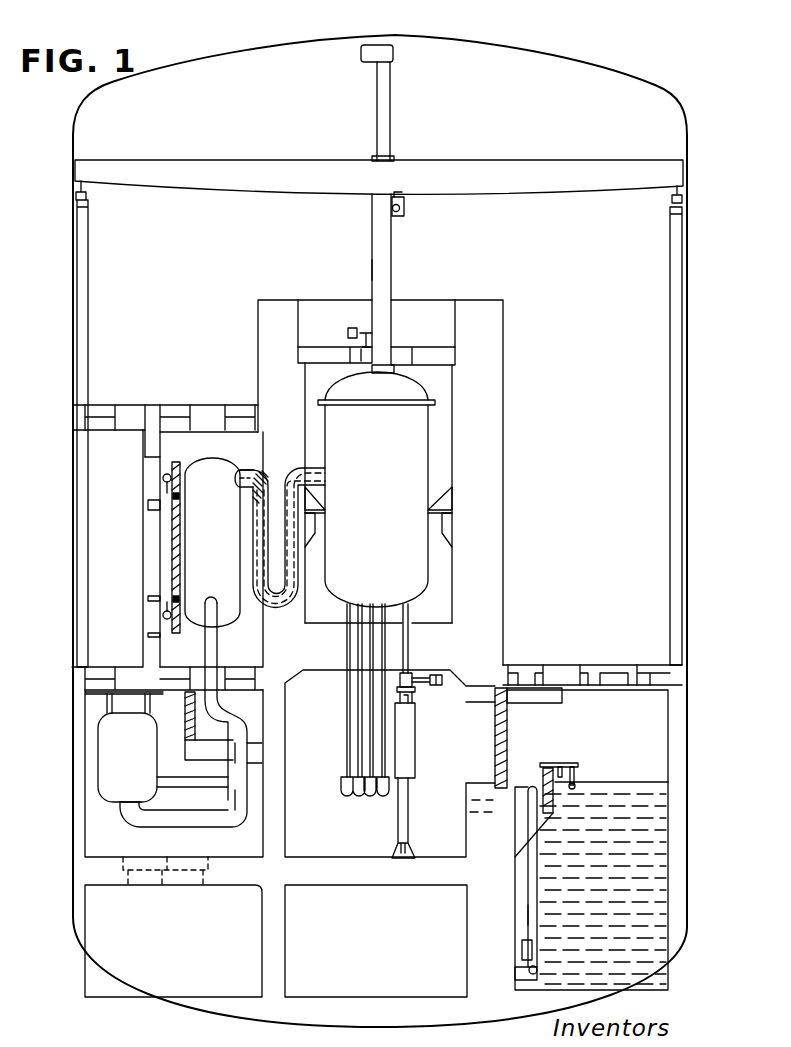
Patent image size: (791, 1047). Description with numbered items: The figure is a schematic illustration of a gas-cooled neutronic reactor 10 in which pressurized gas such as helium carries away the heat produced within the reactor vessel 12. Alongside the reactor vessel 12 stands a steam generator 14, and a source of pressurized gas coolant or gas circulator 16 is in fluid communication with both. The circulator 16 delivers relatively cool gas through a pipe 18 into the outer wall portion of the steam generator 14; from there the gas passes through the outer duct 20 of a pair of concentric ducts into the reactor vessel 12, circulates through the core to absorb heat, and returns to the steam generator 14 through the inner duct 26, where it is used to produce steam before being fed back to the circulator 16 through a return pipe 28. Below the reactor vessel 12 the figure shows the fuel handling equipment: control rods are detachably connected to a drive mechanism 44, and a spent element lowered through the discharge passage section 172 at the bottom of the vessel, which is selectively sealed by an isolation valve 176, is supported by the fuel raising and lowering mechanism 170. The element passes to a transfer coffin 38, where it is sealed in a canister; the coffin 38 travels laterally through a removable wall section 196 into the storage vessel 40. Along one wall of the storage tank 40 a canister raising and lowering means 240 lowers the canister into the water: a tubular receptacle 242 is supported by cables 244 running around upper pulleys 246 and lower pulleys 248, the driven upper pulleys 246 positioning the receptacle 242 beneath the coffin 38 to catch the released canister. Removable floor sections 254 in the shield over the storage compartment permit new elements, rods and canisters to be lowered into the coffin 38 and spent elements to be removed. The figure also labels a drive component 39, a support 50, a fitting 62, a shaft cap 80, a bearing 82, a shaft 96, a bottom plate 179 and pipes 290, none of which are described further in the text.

The gas-cooled neutronic reactor 10 is at (521, 125).
The reactor vessel 12 is at (386, 484).
The steam generator 14 is at (220, 541).
The gas circulator 16 is at (138, 770).
The pipe 18 is at (213, 657).
The outer duct 20 is at (262, 488).
The inner duct 26 is at (270, 494).
The return pipe 28 is at (182, 828).
The transfer coffin 38 is at (418, 742).
The drive assembly 39 is at (396, 268).
The storage vessel 40 is at (636, 759).
The drive mechanism 44 is at (364, 803).
The support shelf 50 is at (398, 356).
The sensor 62 is at (357, 322).
The shaft cap 80 is at (358, 56).
The bearing device 82 is at (405, 202).
The shaft 96 is at (371, 239).
The fuel raising and lowering mechanism 170 is at (406, 820).
The discharge passage section 172 is at (402, 640).
The isolation valve 176 is at (440, 673).
The bottom plate 179 is at (437, 622).
The removable wall section 196 is at (507, 732).
The canister raising and lowering means 240 is at (525, 870).
The tubular receptacle 242 is at (521, 952).
The cables 244 is at (527, 913).
The upper pulleys 246 is at (530, 783).
The lower pulleys 248 is at (537, 983).
The removable floor sections 254 is at (637, 672).
The pipes 290 is at (360, 706).